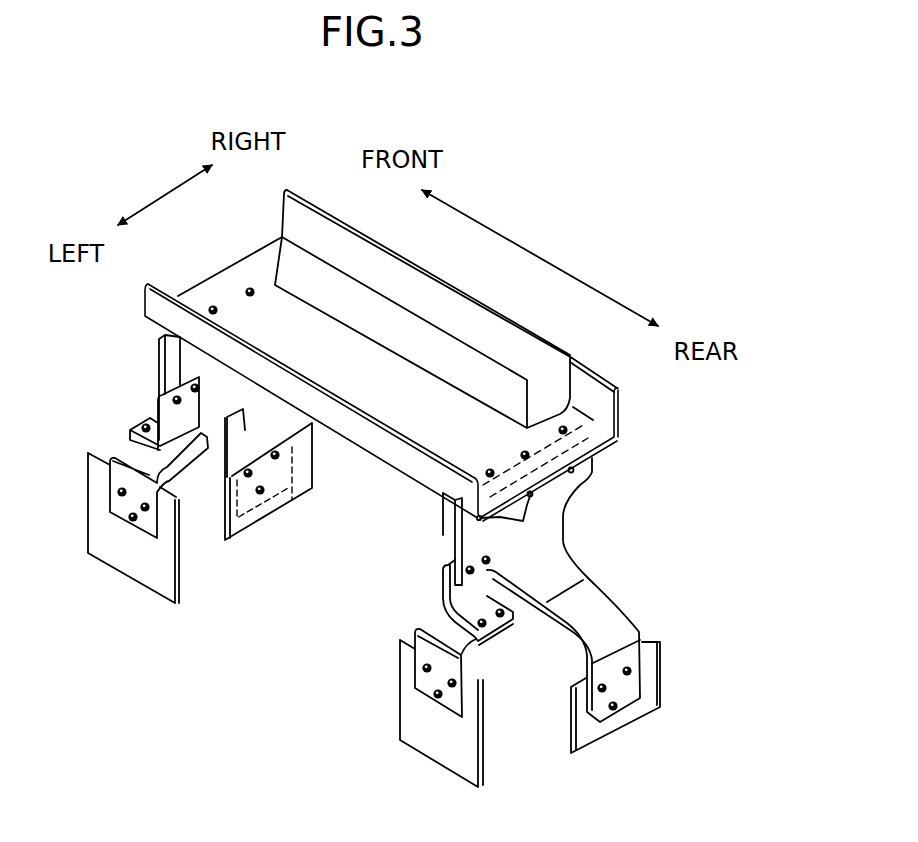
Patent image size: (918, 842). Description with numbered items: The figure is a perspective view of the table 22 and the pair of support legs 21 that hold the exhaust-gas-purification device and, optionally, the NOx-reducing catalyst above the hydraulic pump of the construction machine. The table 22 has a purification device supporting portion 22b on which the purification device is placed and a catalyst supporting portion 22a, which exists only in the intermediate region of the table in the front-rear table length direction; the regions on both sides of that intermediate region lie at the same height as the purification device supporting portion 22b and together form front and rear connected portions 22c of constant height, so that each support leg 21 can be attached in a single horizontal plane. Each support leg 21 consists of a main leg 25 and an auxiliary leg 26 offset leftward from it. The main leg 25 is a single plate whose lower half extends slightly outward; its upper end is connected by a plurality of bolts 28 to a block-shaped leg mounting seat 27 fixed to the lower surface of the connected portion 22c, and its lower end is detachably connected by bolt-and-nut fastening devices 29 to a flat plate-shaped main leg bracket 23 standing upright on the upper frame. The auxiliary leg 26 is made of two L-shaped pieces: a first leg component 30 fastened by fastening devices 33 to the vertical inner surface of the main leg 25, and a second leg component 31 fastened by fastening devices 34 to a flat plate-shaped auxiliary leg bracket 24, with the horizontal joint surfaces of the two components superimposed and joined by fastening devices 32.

The support leg 21 is at (188, 598).
The table 22 is at (372, 458).
The catalyst supporting portion 22a is at (421, 285).
The purification device supporting portion 22b is at (336, 345).
The connected portion 22c is at (231, 277).
The main leg bracket 23 is at (312, 490).
The auxiliary leg bracket 24 is at (88, 496).
The main leg 25 is at (232, 432).
The auxiliary leg 26 is at (176, 482).
The leg mounting seat 27 is at (163, 348).
The bolt 28 is at (433, 565).
The fastening device 29 is at (262, 494).
The first leg component 30 is at (203, 410).
The second leg component 31 is at (110, 458).
The fastening device 32 is at (144, 426).
The fastening device 33 is at (194, 385).
The fastening device 34 is at (134, 520).